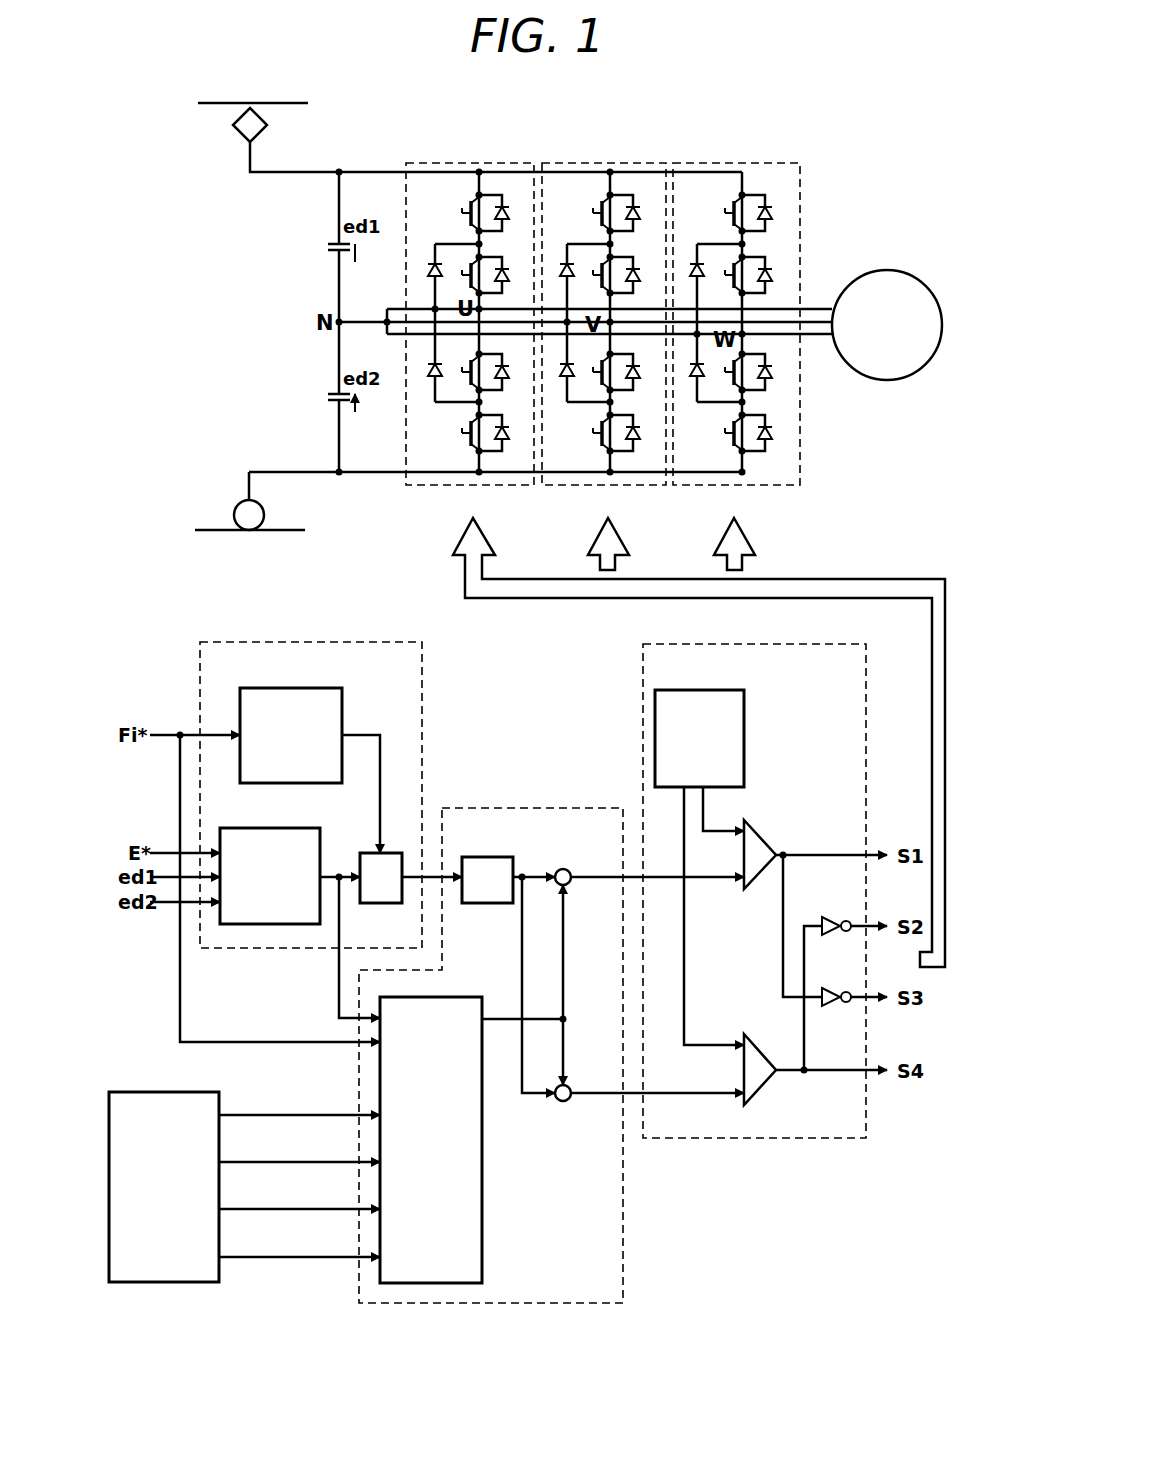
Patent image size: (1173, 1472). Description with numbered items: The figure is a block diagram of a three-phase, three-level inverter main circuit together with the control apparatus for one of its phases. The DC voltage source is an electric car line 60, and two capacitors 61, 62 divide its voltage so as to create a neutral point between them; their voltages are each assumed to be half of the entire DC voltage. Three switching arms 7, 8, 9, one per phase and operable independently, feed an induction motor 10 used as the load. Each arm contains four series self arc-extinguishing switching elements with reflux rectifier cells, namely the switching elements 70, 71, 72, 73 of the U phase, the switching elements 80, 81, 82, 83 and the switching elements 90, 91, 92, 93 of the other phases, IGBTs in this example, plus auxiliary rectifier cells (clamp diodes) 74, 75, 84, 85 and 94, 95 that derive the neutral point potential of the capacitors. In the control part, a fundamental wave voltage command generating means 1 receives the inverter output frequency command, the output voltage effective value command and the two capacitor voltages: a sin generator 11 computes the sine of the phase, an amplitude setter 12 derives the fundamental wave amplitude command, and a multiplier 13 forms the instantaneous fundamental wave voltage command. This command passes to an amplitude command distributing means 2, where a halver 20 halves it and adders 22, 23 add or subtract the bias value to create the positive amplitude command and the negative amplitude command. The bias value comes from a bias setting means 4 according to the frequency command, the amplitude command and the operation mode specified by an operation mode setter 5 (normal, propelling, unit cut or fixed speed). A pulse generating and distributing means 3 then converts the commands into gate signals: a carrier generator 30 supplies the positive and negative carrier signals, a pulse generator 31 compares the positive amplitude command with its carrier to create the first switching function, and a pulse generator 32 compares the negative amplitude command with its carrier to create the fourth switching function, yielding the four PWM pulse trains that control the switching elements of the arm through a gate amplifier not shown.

The fundamental wave voltage command generating means 1 is at (388, 642).
The amplitude command distributing means 2 is at (584, 808).
The pulse generating and distributing means 3 is at (836, 644).
The bias setting means 4 is at (466, 997).
The operation mode setter 5 is at (202, 1092).
The switching arm 7 is at (458, 162).
The switching arm 8 is at (588, 162).
The switching arm 9 is at (718, 162).
The induction motor 10 is at (906, 278).
The sin generator 11 is at (326, 688).
The amplitude setter 12 is at (310, 828).
The multiplier 13 is at (390, 854).
The halver 20 is at (504, 857).
The adder 22 is at (564, 868).
The adder 23 is at (569, 1084).
The carrier generator 30 is at (734, 690).
The pulse generator 31 is at (770, 838).
The pulse generator 32 is at (770, 1048).
The electric car line 60 is at (267, 102).
The capacitor 61 is at (327, 256).
The capacitor 62 is at (327, 408).
The switching element 70 is at (486, 192).
The switching element 71 is at (492, 258).
The switching element 72 is at (483, 390).
The switching element 73 is at (483, 450).
The auxiliary rectifier cell 74 is at (432, 262).
The auxiliary rectifier cell 75 is at (434, 380).
The switching element 80 is at (616, 192).
The switching element 81 is at (625, 258).
The switching element 82 is at (614, 390).
The switching element 83 is at (614, 450).
The auxiliary rectifier cell 84 is at (566, 262).
The auxiliary rectifier cell 85 is at (567, 380).
The switching element 90 is at (748, 192).
The switching element 91 is at (759, 258).
The switching element 92 is at (748, 390).
The switching element 93 is at (748, 450).
The auxiliary rectifier cell 94 is at (697, 262).
The auxiliary rectifier cell 95 is at (697, 380).